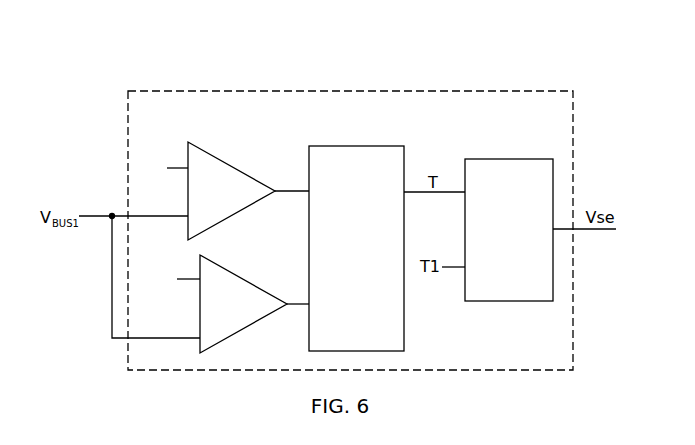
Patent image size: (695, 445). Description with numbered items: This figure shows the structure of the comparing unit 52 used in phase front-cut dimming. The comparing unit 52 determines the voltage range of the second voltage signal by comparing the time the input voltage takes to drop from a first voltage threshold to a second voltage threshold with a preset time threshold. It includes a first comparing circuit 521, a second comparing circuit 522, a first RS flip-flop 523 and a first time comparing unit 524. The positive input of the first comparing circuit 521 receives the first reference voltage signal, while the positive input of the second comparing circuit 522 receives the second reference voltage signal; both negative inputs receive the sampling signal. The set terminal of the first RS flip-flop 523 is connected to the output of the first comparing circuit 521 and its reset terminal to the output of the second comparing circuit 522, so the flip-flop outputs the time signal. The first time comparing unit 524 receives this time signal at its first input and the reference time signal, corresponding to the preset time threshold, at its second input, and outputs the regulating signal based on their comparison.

The comparing unit 52 is at (428, 98).
The first comparing circuit 521 is at (243, 170).
The second comparing circuit 522 is at (241, 275).
The first RS flip-flop 523 is at (350, 153).
The first time comparing unit 524 is at (509, 230).